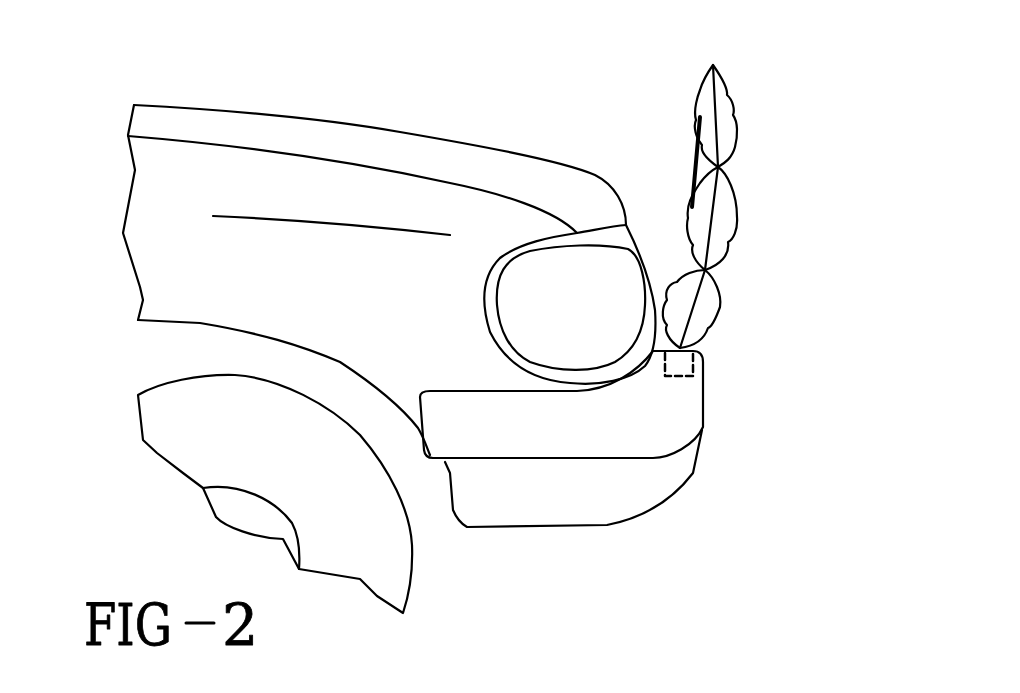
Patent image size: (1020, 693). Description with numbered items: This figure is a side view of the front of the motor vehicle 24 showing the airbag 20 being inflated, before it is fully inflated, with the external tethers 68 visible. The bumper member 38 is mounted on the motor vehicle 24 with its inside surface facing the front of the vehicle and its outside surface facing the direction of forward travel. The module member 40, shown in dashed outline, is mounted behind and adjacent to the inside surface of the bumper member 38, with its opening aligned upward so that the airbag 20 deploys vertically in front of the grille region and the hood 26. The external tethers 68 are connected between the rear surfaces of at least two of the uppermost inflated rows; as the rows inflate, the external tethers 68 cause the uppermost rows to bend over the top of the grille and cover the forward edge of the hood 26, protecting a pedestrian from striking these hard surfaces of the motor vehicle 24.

The airbag 20 is at (740, 200).
The motor vehicle 24 is at (245, 113).
The hood 26 is at (467, 142).
The bumper member 38 is at (628, 442).
The module member 40 is at (695, 367).
The external tethers 68 is at (680, 157).